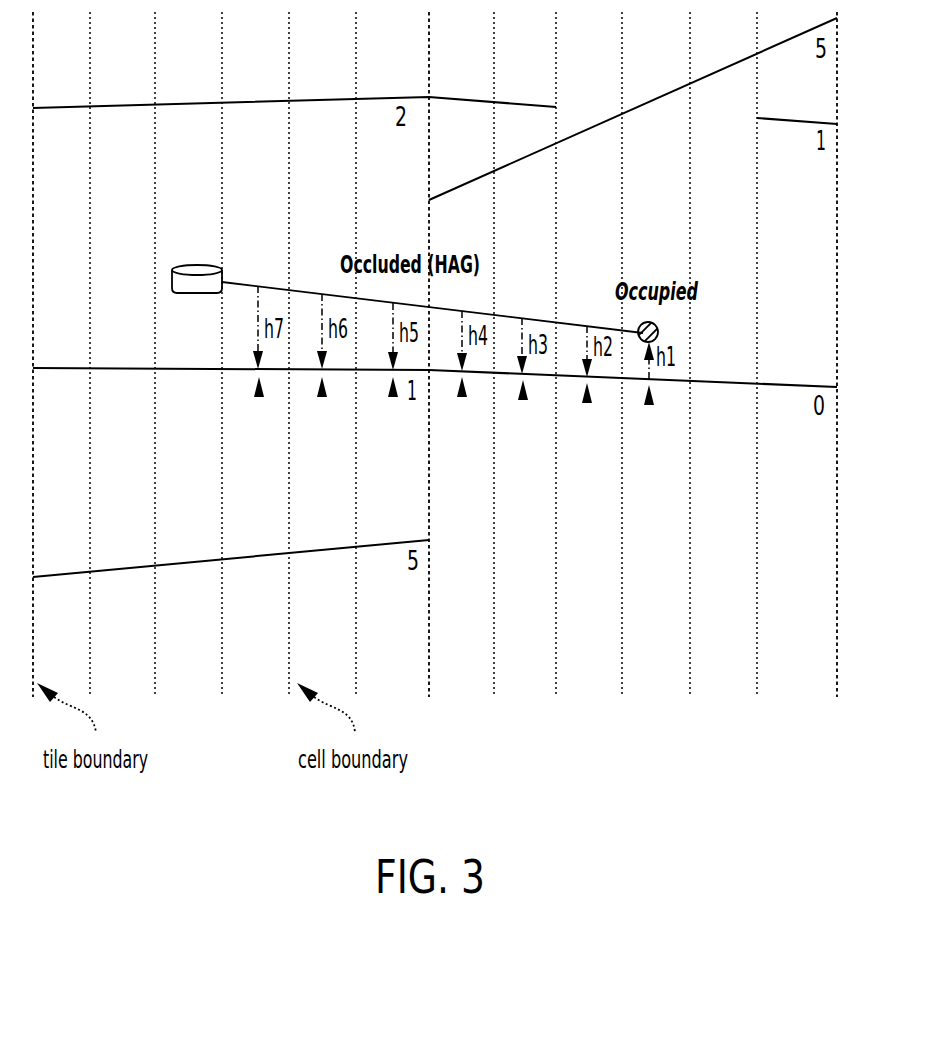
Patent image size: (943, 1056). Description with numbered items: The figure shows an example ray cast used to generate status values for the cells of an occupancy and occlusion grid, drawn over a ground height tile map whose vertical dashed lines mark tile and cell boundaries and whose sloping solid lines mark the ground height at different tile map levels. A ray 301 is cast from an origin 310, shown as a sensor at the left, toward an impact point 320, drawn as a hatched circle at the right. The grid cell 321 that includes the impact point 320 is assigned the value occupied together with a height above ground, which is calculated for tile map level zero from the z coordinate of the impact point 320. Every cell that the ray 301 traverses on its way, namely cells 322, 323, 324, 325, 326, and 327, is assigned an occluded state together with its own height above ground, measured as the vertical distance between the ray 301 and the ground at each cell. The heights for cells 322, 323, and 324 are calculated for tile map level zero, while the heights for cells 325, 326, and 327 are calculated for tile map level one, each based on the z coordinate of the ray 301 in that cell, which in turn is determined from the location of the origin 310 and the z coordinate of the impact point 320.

The origin 310 is at (197, 265).
The ray 301 is at (238, 283).
The impact point 320 is at (658, 328).
The grid cell 321 is at (649, 404).
The cell 322 is at (587, 402).
The cell 323 is at (523, 399).
The cell 324 is at (462, 396).
The cell 325 is at (393, 396).
The cell 326 is at (322, 396).
The cell 327 is at (259, 396).